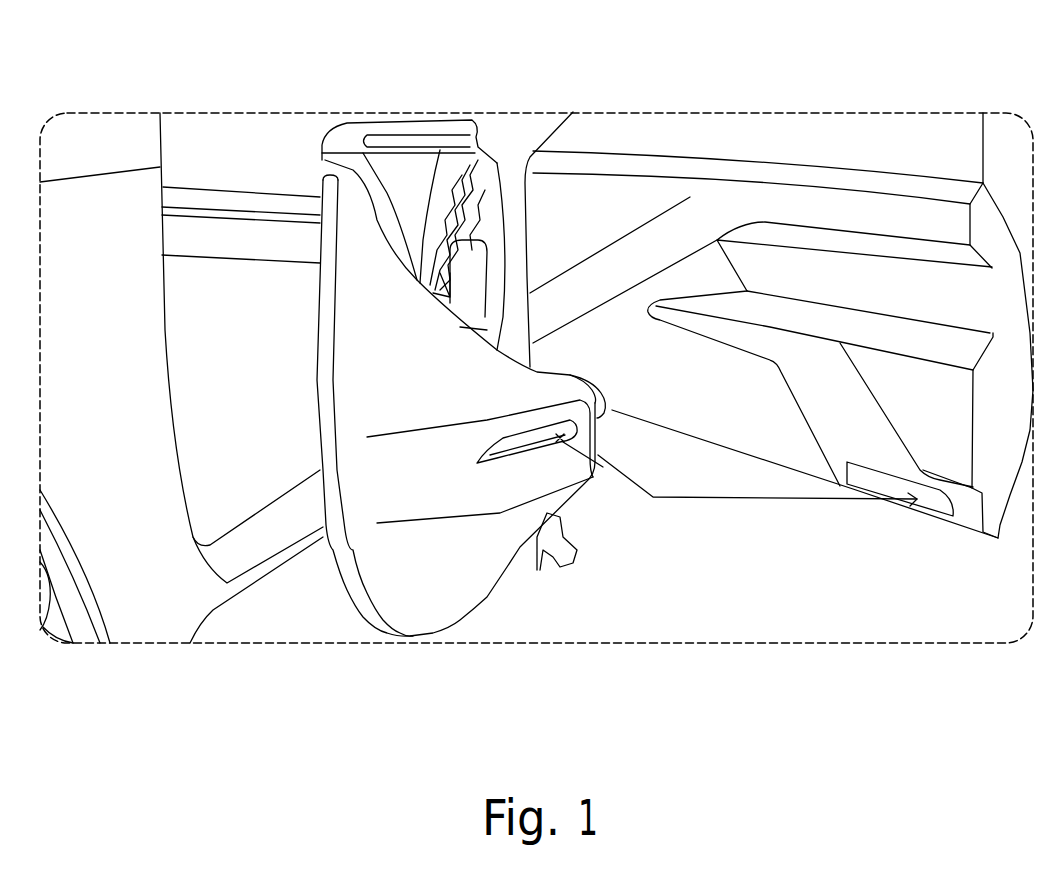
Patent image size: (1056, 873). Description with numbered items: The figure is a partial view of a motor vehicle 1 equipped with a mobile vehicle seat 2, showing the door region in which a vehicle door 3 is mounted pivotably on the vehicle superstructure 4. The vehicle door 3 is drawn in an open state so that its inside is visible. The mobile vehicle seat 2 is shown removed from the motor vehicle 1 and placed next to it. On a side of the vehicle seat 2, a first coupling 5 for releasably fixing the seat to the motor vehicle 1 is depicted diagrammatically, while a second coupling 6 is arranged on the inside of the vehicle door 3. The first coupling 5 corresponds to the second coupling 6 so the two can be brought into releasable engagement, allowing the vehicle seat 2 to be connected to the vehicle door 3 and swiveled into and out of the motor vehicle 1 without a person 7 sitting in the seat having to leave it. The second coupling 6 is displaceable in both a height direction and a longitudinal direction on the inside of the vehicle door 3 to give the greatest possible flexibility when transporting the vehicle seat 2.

The motor vehicle 1 is at (143, 661).
The mobile vehicle seat 2 is at (433, 600).
The vehicle door 3 is at (1007, 473).
The vehicle superstructure 4 is at (92, 150).
The first coupling 5 is at (512, 448).
The second coupling 6 is at (935, 502).
The person 7 is at (455, 250).